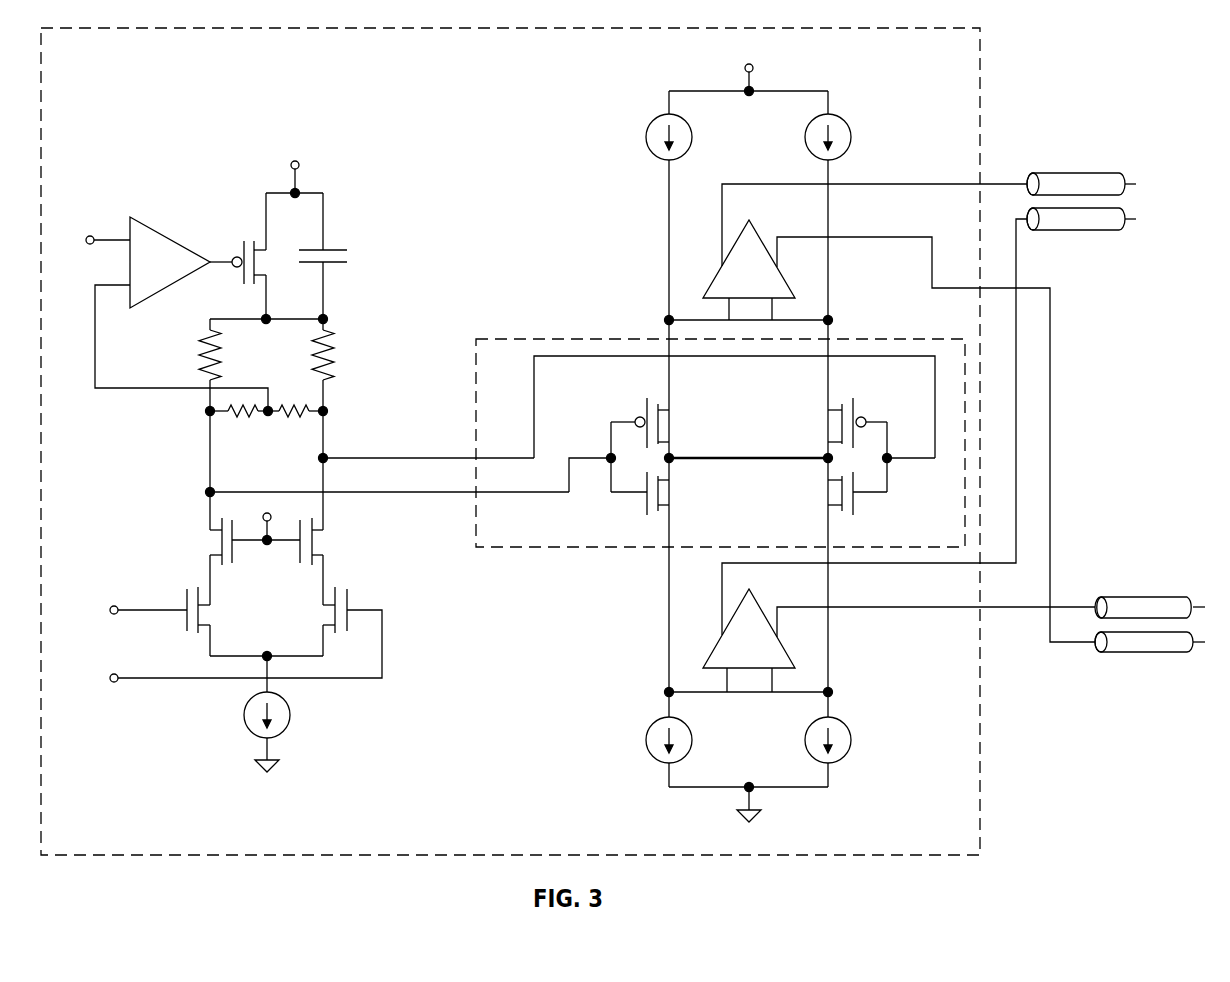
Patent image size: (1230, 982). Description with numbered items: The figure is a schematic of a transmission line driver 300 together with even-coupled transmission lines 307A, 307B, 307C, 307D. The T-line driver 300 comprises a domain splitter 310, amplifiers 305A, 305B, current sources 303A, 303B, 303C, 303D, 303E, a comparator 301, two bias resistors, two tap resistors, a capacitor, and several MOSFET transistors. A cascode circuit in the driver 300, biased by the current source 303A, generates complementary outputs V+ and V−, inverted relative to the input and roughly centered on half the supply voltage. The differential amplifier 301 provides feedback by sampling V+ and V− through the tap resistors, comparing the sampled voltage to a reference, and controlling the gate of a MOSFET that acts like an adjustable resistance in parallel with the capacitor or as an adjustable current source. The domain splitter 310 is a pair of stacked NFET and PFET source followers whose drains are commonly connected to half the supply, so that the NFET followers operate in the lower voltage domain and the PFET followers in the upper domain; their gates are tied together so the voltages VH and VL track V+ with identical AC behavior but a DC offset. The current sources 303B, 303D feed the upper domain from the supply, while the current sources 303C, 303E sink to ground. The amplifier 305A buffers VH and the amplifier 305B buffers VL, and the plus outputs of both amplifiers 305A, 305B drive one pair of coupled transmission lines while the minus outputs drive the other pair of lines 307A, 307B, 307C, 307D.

The transmission line driver 300 is at (568, 441).
The comparator 301 is at (177, 314).
The current source 303A is at (290, 721).
The current source 303B is at (692, 123).
The current source 303C is at (692, 746).
The current source 303D is at (851, 123).
The current source 303E is at (851, 744).
The amplifier 305A is at (749, 254).
The amplifier 305B is at (749, 628).
The transmission line 307A is at (1079, 140).
The transmission line 307B is at (1081, 181).
The transmission line 307C is at (1149, 661).
The transmission line 307D is at (1150, 678).
The domain splitter 310 is at (720, 443).